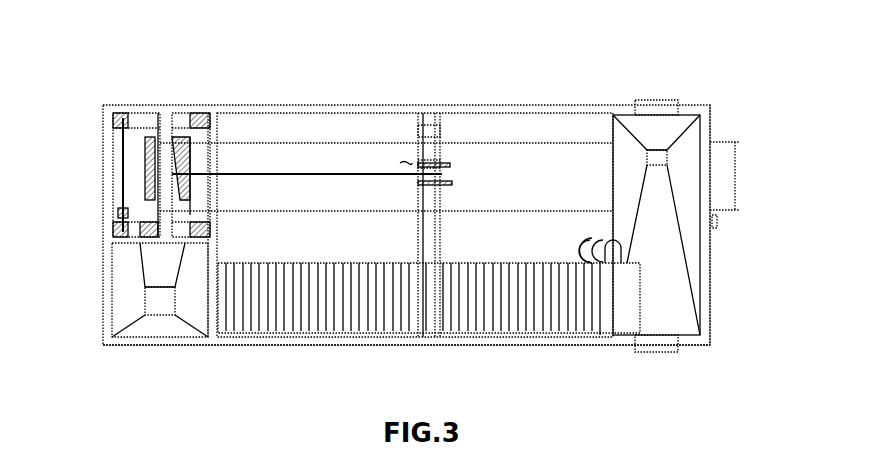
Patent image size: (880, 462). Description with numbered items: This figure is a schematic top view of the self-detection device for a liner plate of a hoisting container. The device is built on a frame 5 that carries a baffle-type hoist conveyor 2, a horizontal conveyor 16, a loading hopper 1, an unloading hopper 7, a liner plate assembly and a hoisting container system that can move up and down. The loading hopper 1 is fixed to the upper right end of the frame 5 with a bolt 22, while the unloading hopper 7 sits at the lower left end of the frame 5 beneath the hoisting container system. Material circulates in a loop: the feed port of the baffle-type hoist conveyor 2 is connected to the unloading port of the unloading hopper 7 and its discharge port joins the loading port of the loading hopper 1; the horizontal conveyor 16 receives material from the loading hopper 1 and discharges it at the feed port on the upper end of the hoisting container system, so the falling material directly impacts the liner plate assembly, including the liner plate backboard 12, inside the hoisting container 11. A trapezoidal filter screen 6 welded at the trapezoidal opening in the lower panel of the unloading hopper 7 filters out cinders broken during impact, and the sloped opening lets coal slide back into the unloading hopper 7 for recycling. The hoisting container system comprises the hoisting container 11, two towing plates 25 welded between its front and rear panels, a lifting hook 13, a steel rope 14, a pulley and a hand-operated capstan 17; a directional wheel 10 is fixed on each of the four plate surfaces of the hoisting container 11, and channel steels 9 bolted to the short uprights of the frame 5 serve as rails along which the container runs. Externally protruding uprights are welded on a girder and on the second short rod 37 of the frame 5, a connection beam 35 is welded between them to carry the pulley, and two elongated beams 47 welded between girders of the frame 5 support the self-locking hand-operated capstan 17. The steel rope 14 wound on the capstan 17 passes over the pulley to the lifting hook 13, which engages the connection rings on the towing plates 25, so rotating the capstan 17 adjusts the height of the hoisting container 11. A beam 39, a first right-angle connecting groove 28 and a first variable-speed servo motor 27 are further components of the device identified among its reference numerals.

The loading hopper 1 is at (685, 183).
The baffle-type hoist conveyor 2 is at (618, 297).
The frame 5 is at (108, 343).
The trapezoidal filter screen 6 is at (143, 142).
The unloading hopper 7 is at (125, 308).
The channel steel 9 is at (118, 120).
The directional wheel 10 is at (140, 238).
The hoisting container 11 is at (150, 240).
The liner plate backboard 12 is at (122, 215).
The lifting hook 13 is at (130, 195).
The steel rope 14 is at (150, 226).
The horizontal conveyor 16 is at (722, 158).
The hand-operated capstan 17 is at (430, 162).
The bolt 22 is at (132, 130).
The towing plate 25 is at (152, 148).
The first variable-speed servo motor 27 is at (595, 250).
The first right-angle connecting groove 28 is at (663, 103).
The connection beam 35 is at (163, 243).
The second short rod 37 is at (165, 237).
The beam 39 is at (707, 227).
The elongated beam 47 is at (448, 132).